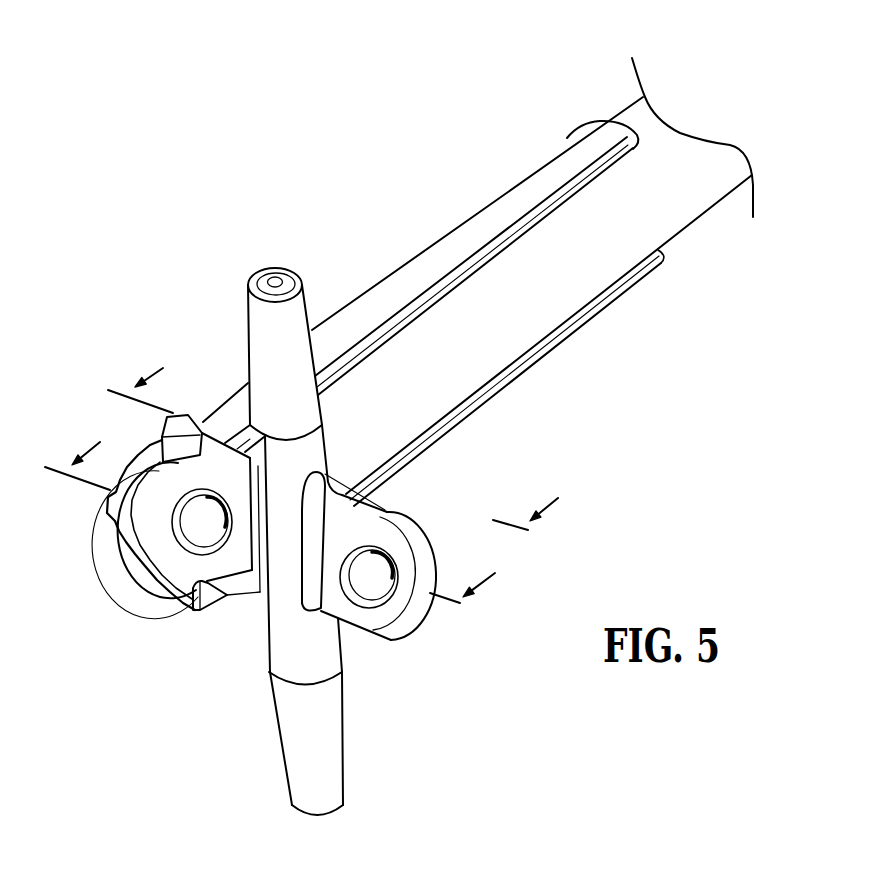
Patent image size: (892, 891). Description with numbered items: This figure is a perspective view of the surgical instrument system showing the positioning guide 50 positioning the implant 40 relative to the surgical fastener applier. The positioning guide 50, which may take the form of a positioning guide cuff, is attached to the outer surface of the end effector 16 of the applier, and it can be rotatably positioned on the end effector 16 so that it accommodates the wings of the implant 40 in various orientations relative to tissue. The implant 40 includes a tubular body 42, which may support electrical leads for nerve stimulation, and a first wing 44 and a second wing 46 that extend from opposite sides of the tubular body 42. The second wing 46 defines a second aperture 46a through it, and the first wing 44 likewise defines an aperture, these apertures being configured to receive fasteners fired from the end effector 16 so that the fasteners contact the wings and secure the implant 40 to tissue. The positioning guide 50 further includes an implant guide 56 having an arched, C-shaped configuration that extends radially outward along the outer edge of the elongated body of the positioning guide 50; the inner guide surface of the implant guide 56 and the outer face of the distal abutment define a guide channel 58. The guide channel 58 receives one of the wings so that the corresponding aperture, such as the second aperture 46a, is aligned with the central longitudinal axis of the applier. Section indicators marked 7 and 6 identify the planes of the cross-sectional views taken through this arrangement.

The end effector 16 is at (658, 220).
The positioning guide 50 is at (512, 195).
The implant 40 is at (278, 655).
The tubular body 42 is at (335, 655).
The first wing 44 is at (402, 537).
The second wing 46 is at (167, 508).
The second aperture 46a is at (197, 526).
The implant guide 56 is at (133, 453).
The guide channel 58 is at (182, 572).
The section line 7- 7 is at (340, 442).
The section line 6- 6 is at (277, 518).